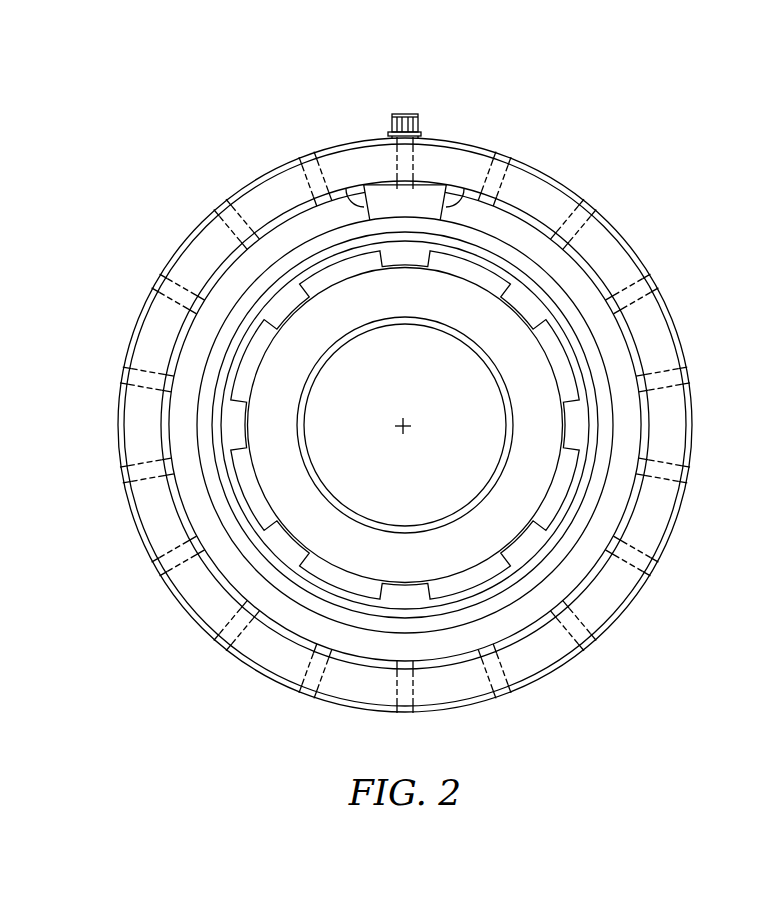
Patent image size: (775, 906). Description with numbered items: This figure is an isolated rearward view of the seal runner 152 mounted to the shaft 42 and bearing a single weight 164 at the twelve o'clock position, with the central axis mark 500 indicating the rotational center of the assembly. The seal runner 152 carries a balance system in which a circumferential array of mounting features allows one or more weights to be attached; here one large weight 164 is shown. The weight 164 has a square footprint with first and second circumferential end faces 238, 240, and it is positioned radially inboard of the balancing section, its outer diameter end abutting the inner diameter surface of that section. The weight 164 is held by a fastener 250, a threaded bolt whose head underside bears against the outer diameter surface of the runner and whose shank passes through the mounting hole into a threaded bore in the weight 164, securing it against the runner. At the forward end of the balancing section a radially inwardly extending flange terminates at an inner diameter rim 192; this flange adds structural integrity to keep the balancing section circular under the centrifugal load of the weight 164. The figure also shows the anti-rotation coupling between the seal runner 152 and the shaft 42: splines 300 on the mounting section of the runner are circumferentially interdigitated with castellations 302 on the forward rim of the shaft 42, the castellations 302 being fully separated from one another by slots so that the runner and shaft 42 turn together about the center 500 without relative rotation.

The seal runner 152 is at (668, 279).
The inner diameter rim 192 is at (607, 330).
The first circumferential end face 238 is at (358, 193).
The second circumferential end face 240 is at (469, 198).
The weight 164 is at (408, 199).
The fastener 250 is at (408, 107).
The castellations 302 is at (480, 275).
The splines 300 is at (527, 307).
The shaft 42 is at (514, 505).
The central axis 500 is at (404, 428).